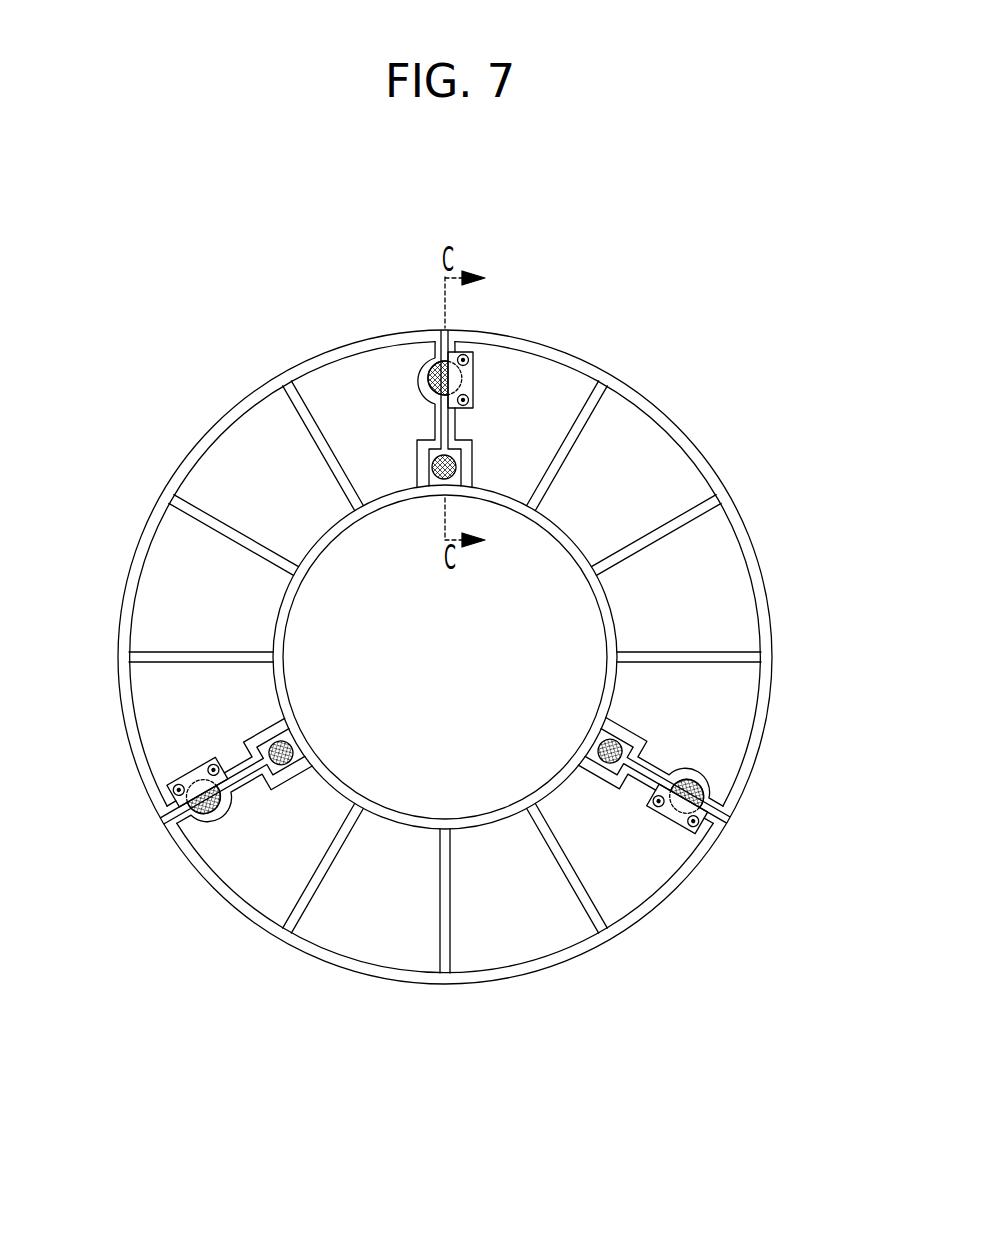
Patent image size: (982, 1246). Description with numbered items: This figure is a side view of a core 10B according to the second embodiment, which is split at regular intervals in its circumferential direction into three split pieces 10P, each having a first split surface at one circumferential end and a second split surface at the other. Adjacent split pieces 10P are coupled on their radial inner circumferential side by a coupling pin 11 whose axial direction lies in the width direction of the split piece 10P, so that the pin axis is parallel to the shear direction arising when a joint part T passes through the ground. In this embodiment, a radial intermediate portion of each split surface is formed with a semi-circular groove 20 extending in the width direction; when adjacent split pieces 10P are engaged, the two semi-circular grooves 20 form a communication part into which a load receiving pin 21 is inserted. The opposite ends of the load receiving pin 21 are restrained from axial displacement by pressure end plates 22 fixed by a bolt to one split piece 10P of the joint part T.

The core 10B is at (480, 647).
The split piece 10P is at (197, 438).
The coupling pin 11 is at (442, 472).
The semi-circular groove 20 is at (428, 378).
The load receiving pin 21 is at (440, 370).
The pressure end plate 22 is at (464, 356).
The joint part T is at (440, 323).